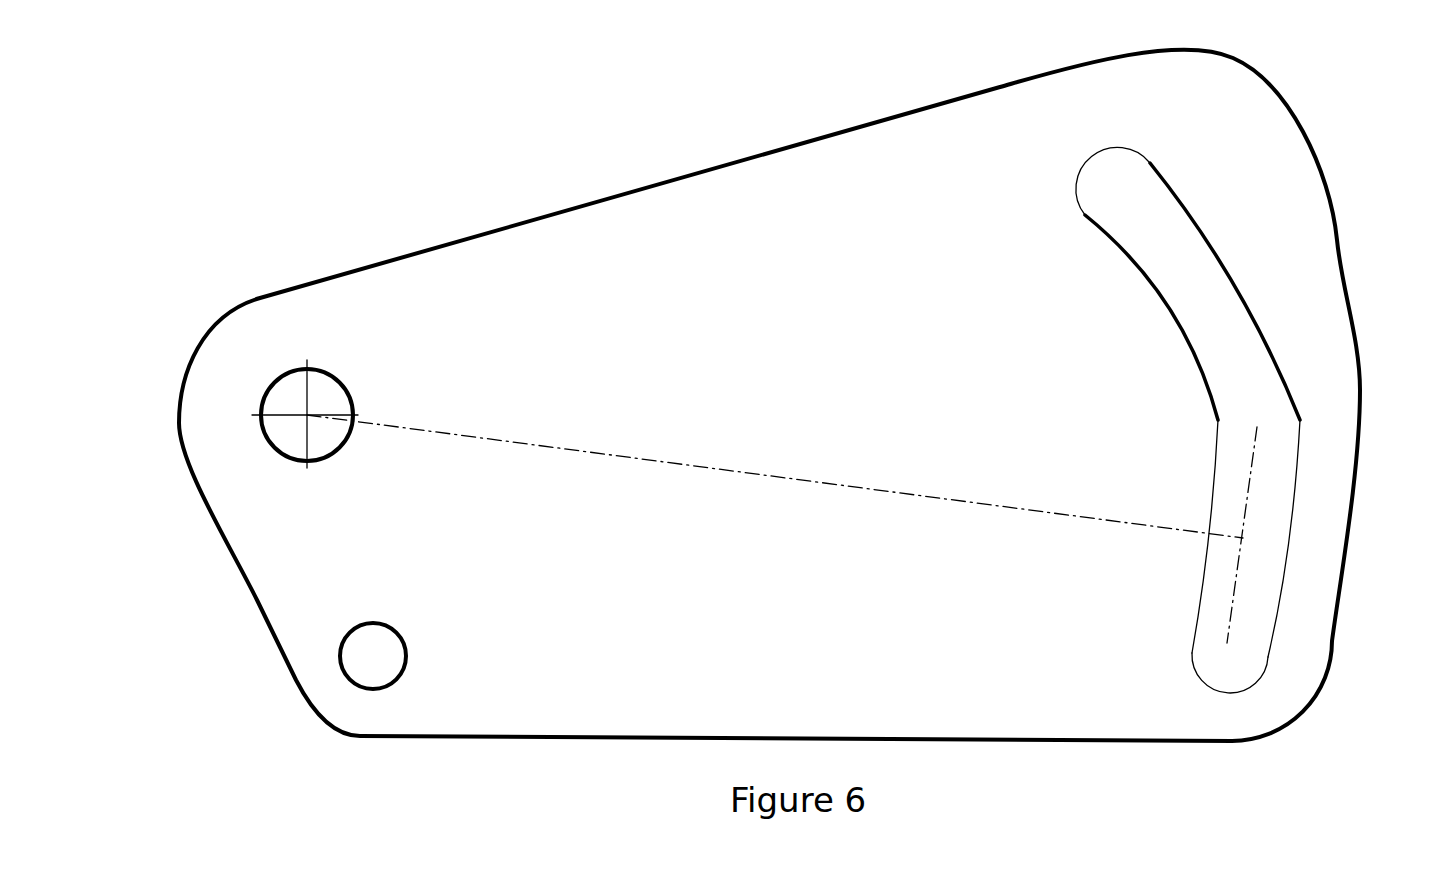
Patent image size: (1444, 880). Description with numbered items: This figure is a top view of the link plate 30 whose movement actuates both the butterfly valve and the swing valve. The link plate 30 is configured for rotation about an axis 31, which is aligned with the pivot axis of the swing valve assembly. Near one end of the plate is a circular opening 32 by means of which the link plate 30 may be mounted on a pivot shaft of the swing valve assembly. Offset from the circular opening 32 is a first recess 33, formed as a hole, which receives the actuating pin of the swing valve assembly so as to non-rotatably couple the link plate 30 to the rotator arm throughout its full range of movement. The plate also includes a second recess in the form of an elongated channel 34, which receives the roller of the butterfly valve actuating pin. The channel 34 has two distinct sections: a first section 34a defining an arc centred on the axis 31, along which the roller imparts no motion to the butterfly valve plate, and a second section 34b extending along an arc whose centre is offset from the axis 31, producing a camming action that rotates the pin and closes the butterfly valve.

The link plate 30 is at (637, 268).
The axis 31 is at (307, 415).
The circular opening 32 is at (292, 372).
The first recess 33 is at (343, 675).
The elongated channel 34 is at (1252, 420).
The first section 34a is at (1262, 578).
The second section 34b is at (1185, 278).